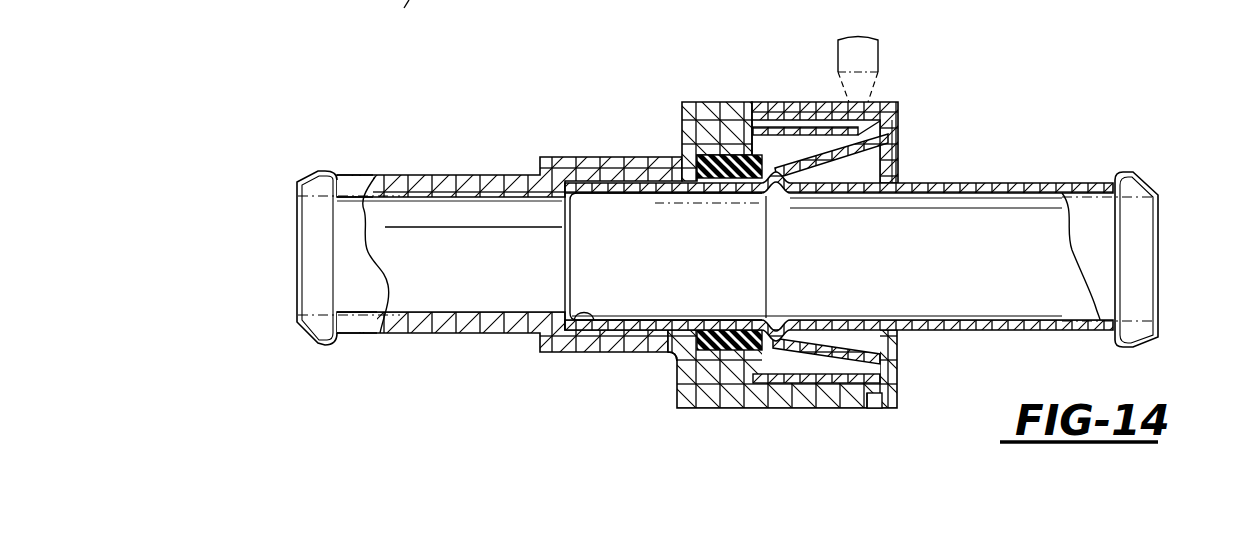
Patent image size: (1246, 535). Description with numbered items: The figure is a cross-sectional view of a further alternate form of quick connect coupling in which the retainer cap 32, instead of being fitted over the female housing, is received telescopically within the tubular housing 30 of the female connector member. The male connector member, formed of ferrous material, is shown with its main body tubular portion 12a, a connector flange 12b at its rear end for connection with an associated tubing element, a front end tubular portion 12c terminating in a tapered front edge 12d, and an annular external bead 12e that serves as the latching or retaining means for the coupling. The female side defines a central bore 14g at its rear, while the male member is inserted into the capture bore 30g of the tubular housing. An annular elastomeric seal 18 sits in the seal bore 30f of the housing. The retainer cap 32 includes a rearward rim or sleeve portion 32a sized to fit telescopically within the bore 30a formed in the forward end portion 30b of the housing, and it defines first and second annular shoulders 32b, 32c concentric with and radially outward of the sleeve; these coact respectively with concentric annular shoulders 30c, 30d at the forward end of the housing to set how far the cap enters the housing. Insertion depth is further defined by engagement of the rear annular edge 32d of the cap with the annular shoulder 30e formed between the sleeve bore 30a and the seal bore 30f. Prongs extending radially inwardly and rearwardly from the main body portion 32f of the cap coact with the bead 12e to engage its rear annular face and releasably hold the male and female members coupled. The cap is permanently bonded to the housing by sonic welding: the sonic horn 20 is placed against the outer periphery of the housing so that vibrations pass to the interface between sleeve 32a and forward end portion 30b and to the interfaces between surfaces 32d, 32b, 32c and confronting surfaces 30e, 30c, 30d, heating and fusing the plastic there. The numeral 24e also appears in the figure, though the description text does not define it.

The main body tubular portion 12a is at (1062, 183).
The connector flange 12b is at (1142, 181).
The front end tubular portion 12c is at (681, 194).
The tapered front edge 12d is at (585, 195).
The annular external bead 12e is at (798, 186).
The central bore 14g is at (418, 193).
The seal 18 is at (708, 146).
The sonic horn 20 is at (838, 62).
The element 24e is at (384, 18).
The tubular housing 30 is at (492, 168).
The bore 30a is at (423, 180).
The forward end portion 30b is at (708, 103).
The annular shoulder 30c is at (868, 408).
The annular shoulder 30d is at (878, 408).
The annular shoulder 30e is at (735, 390).
The seal bore 30f is at (672, 355).
The capture bore 30g is at (575, 325).
The retainer cap 32 is at (908, 130).
The sleeve portion 32a is at (882, 346).
The first annular shoulder 32b is at (848, 124).
The second annular shoulder 32c is at (882, 103).
The rear annular edge 32d is at (738, 386).
The main body portion 32f is at (890, 138).